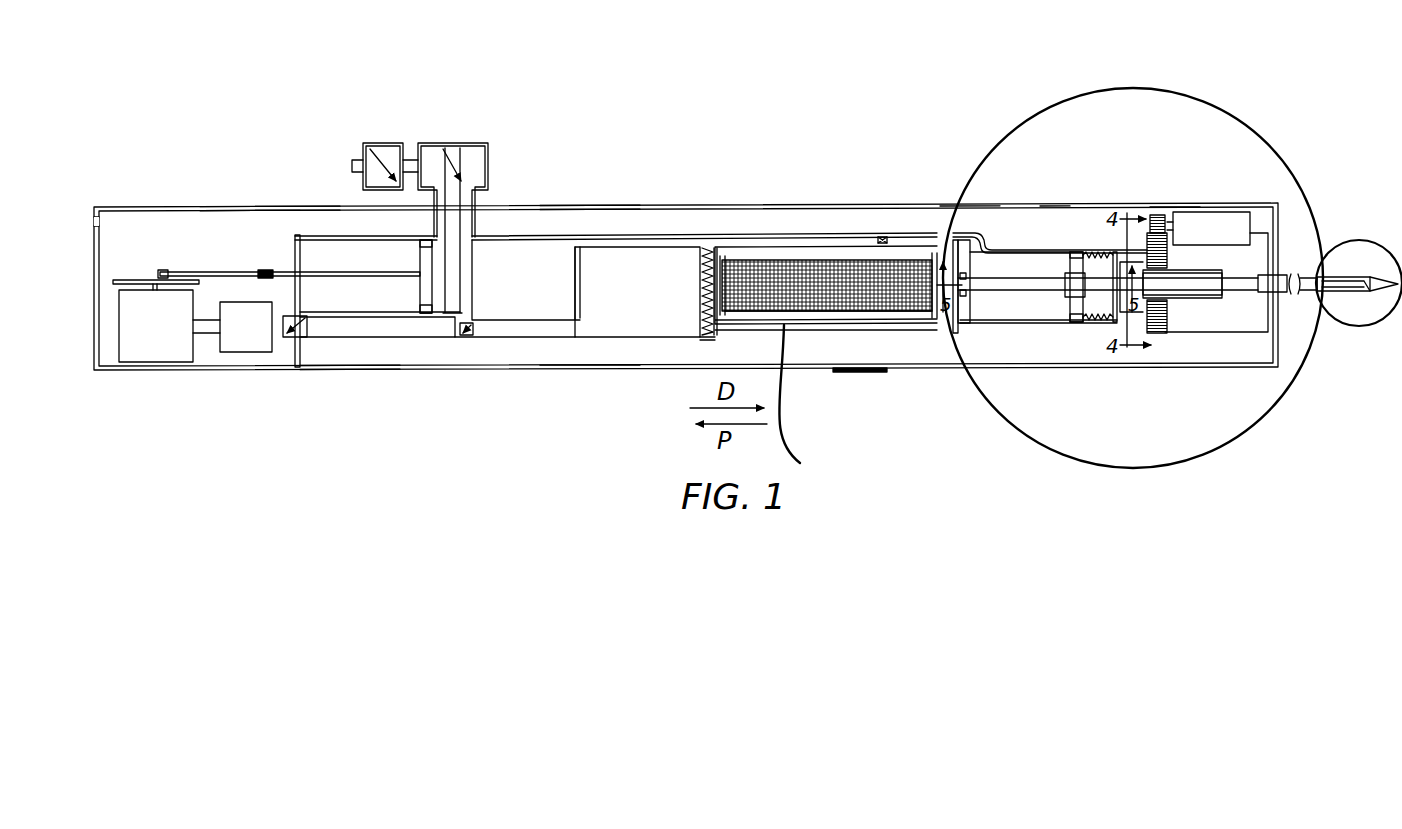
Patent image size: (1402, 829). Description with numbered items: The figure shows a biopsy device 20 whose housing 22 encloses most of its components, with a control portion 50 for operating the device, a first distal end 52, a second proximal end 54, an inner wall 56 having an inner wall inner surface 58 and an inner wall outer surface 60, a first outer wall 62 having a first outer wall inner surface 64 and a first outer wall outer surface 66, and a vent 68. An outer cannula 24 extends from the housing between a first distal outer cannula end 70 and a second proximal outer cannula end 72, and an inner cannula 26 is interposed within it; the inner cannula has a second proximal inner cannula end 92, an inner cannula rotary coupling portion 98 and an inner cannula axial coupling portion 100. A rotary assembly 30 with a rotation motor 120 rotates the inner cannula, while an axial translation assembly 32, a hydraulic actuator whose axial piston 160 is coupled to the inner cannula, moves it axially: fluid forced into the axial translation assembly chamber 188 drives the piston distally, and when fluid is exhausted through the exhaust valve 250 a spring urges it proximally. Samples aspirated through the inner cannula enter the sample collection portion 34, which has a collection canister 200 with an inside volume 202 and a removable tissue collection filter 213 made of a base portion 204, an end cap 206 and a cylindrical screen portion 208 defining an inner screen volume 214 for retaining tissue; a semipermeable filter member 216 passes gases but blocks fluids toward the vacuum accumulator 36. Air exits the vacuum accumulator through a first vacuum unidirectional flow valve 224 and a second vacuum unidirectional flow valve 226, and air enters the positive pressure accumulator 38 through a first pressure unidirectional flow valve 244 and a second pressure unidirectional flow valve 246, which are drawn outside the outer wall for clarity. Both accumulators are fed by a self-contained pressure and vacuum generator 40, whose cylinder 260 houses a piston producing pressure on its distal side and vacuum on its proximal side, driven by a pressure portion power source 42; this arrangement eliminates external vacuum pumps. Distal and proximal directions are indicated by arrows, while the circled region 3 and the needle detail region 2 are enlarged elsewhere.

The needle assembly 2 is at (1346, 332).
The detail circle 3 is at (1125, 88).
The biopsy device 20 is at (869, 90).
The housing 22 is at (673, 198).
The outer cannula 24 is at (1285, 262).
The inner cannula 26 is at (1334, 264).
The rotary assembly 30 is at (1168, 197).
The axial translation assembly 32 is at (1008, 237).
The sample collection portion 34 is at (773, 255).
The vacuum accumulator 36 is at (614, 268).
The positive pressure accumulator 38 is at (527, 262).
The pressure and vacuum generator 40 is at (341, 379).
The pressure portion power source 42 is at (142, 266).
The control portion 50 is at (850, 383).
The first distal end 52 is at (1262, 220).
The second proximal end 54 is at (157, 378).
The inner wall 56 is at (995, 228).
The inner wall inner surface 58 is at (1004, 311).
The inner wall outer surface 60 is at (1052, 244).
The first outer wall 62 is at (582, 204).
The first outer wall inner surface 64 is at (244, 216).
The first outer wall outer surface 66 is at (272, 203).
The vent 68 is at (86, 222).
The first distal outer cannula end 70 is at (1374, 300).
The second proximal outer cannula end 72 is at (1262, 298).
The second proximal inner cannula end 92 is at (957, 245).
The inner cannula rotary coupling portion 98 is at (1188, 312).
The inner cannula axial coupling portion 100 is at (1068, 270).
The rotation motor 120 is at (1208, 216).
The axial piston 160 is at (1090, 312).
The axial translation assembly chamber 188 is at (1038, 312).
The collection canister 200 is at (823, 255).
The inside volume 202 is at (806, 325).
The base portion 204 is at (955, 326).
The end cap 206 is at (705, 367).
The screen portion 208 is at (770, 254).
The tissue collection filter 213 is at (819, 401).
The inner screen volume 214 is at (906, 312).
The filter member 216 is at (702, 321).
The first vacuum unidirectional flow valve 224 is at (468, 345).
The second vacuum unidirectional flow valve 226 is at (300, 340).
The first pressure unidirectional flow valve 244 is at (455, 158).
The second pressure unidirectional flow valve 246 is at (383, 156).
The exhaust valve 250 is at (882, 236).
The cylinder 260 is at (338, 233).